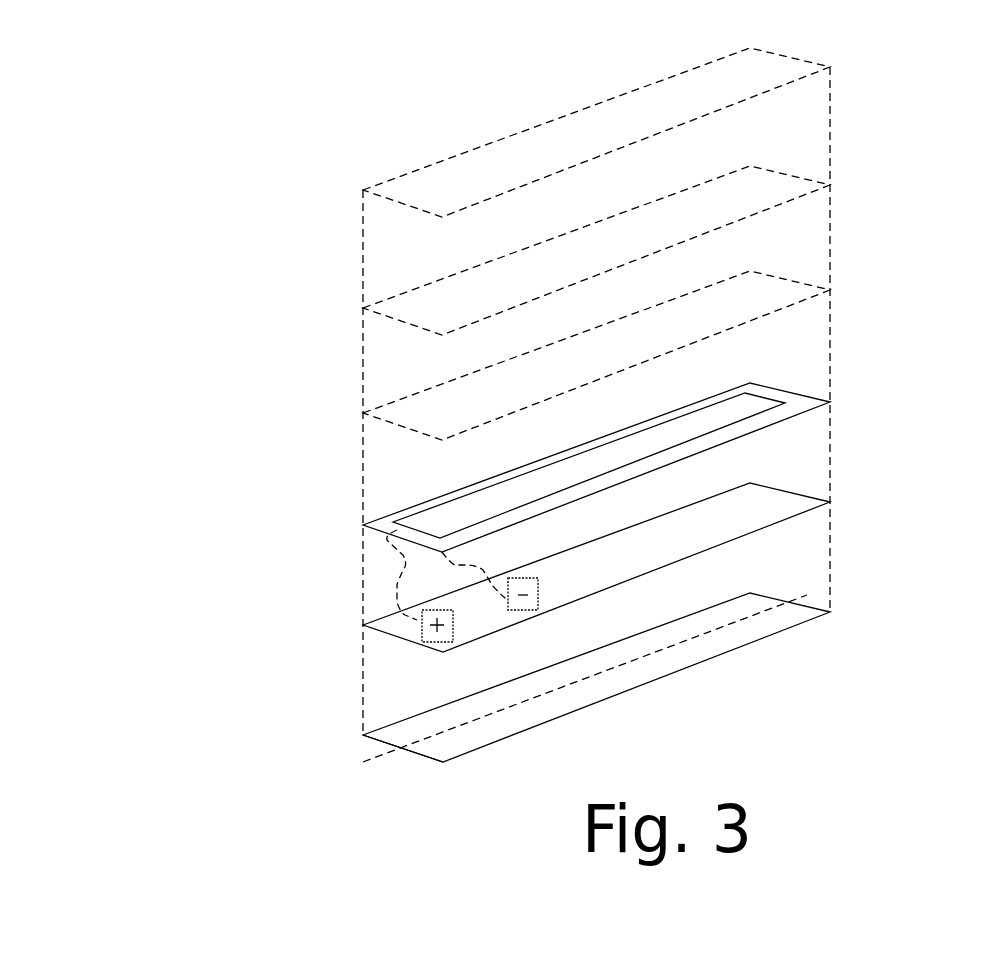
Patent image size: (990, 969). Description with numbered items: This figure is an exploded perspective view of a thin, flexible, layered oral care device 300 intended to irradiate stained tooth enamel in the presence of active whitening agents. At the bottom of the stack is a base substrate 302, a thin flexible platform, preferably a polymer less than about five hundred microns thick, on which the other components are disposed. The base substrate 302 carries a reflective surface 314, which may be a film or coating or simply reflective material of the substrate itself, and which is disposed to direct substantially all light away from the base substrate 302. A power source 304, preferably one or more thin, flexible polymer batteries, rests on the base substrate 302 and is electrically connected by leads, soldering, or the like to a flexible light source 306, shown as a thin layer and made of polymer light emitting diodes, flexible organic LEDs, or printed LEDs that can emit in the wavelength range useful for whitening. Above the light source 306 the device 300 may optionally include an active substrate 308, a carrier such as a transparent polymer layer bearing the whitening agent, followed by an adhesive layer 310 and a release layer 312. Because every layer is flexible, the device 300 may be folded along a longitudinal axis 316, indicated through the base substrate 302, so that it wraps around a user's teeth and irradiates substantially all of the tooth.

The oral care device 300 is at (228, 99).
The base substrate 302 is at (792, 612).
The power source 304 is at (792, 507).
The flexible light source 306 is at (790, 400).
The active substrate 308 is at (792, 295).
The adhesive layer 310 is at (792, 188).
The release layer 312 is at (790, 63).
The reflective surface 314 is at (400, 728).
The longitudinal axis 316 is at (400, 750).